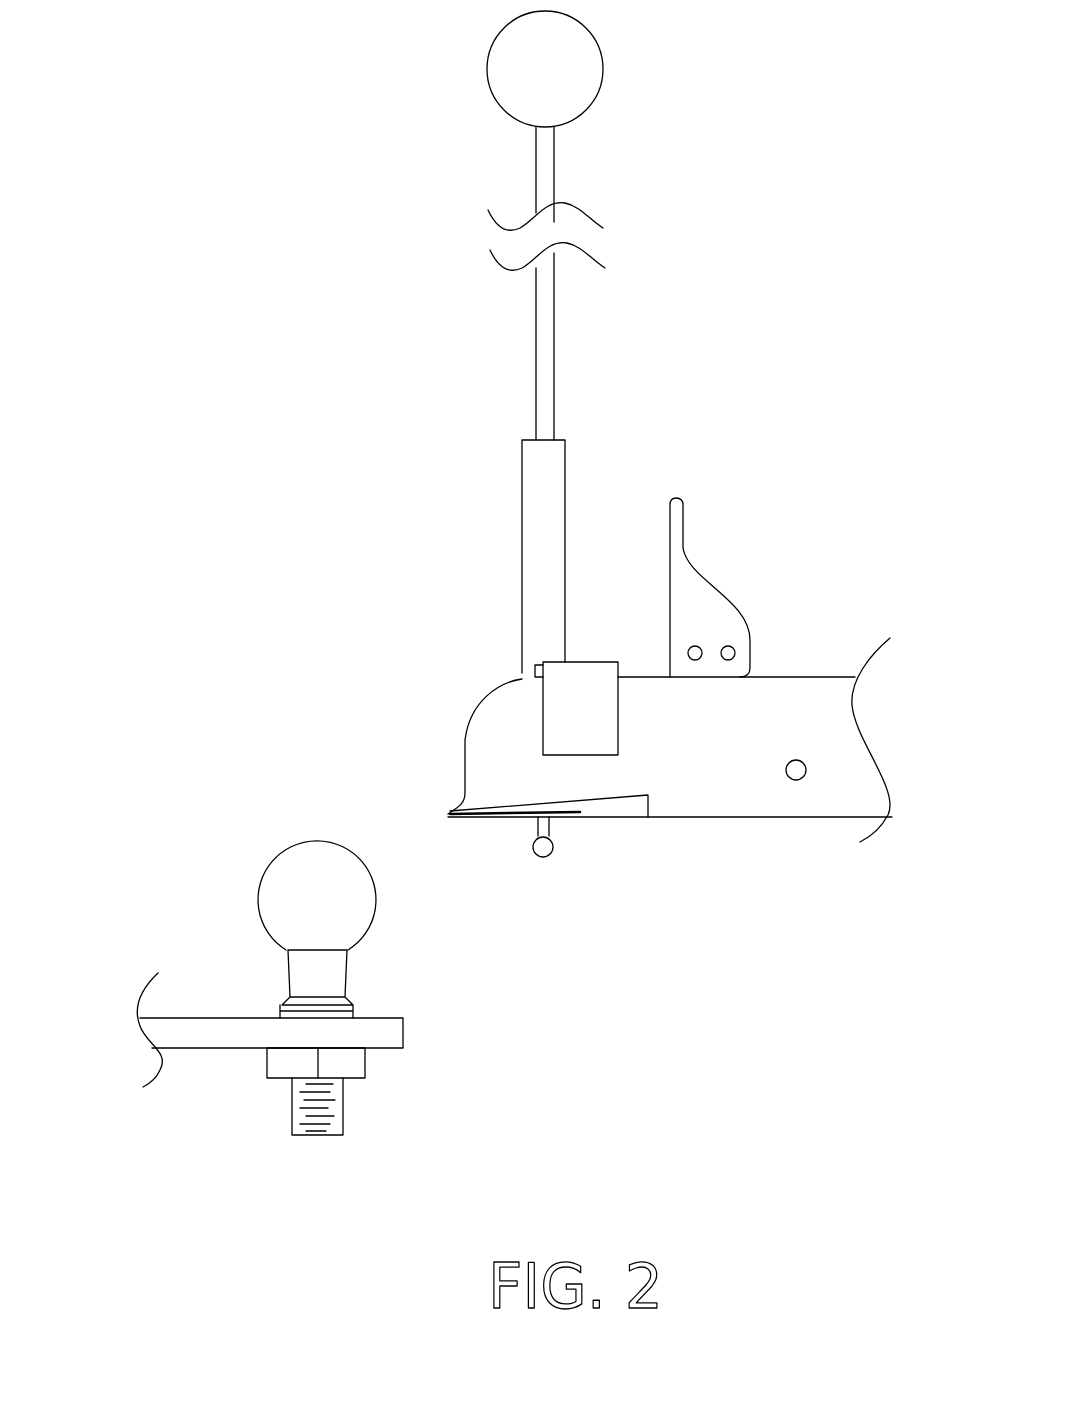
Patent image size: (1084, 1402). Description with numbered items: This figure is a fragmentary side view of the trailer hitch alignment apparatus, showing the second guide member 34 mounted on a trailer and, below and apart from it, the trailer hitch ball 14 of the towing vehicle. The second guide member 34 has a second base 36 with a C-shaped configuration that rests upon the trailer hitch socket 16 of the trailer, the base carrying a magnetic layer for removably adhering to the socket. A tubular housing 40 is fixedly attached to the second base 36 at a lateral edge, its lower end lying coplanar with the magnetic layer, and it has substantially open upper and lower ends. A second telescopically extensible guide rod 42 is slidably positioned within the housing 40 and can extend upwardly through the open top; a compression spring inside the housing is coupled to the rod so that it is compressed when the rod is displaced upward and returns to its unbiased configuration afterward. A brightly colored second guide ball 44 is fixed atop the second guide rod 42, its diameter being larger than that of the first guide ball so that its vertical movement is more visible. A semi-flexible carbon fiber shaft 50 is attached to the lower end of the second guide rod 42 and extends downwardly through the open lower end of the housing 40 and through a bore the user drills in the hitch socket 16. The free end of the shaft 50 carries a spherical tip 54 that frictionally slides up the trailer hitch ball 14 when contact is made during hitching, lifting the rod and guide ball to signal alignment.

The trailer hitch ball 14 is at (288, 850).
The trailer hitch socket 16 is at (462, 770).
The second guide member 34 is at (473, 418).
The second base 36 is at (620, 738).
The tubular housing 40 is at (522, 512).
The second telescopically extensible guide rod 42 is at (557, 330).
The second guide ball 44 is at (603, 72).
The semi-flexible shaft 50 is at (553, 832).
The spherical tip 54 is at (547, 860).